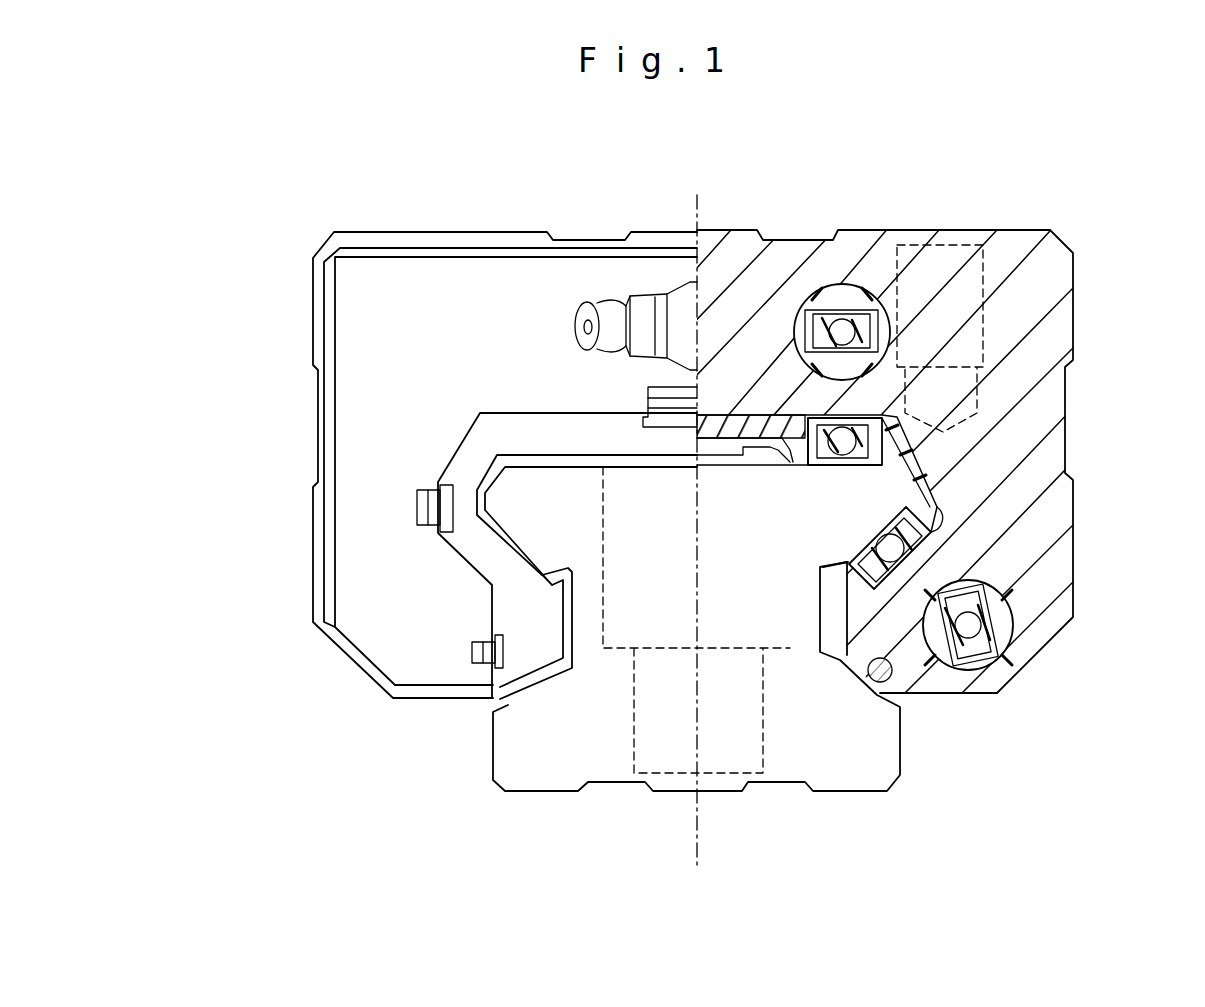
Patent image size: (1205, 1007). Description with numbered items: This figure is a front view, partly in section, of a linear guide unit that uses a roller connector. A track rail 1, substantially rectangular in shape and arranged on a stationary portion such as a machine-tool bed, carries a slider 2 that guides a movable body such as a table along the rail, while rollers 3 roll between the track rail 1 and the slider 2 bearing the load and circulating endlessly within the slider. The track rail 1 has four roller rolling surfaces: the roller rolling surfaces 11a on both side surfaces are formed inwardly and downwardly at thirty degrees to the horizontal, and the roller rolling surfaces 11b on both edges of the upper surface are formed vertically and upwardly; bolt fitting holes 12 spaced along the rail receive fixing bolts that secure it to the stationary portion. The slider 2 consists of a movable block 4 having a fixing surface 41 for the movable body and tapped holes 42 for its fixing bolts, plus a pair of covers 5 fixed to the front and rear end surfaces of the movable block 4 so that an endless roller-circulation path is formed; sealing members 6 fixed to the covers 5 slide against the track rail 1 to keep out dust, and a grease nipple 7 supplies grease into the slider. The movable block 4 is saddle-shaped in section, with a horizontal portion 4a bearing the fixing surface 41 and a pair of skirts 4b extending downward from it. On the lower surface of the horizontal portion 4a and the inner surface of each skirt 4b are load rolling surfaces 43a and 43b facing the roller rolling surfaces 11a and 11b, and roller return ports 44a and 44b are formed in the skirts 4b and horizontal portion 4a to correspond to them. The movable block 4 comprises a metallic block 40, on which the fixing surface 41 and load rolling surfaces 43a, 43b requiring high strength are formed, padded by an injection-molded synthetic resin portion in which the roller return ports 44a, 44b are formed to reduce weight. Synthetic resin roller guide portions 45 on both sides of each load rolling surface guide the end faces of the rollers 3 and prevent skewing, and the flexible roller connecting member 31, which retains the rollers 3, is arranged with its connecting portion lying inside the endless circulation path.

The track rail 1 is at (903, 795).
The slider 2 is at (305, 340).
The rollers 3 is at (907, 457).
The movable block 4 is at (1088, 256).
The horizontal portion 4a is at (728, 257).
The skirts 4b is at (310, 573).
The covers 5 is at (377, 631).
The sealing members 6 is at (530, 655).
The grease nipple 7 is at (606, 300).
The roller rolling surfaces 11a is at (870, 541).
The roller rolling surfaces 11b is at (837, 453).
The bolt fitting holes 12 is at (752, 747).
The roller connecting member 31 is at (843, 322).
The metallic block 40 is at (1063, 323).
The fixing surface 41 is at (476, 232).
The tapped holes 42 is at (960, 277).
The load rolling surfaces 43a is at (1045, 568).
The load rolling surfaces 43b is at (790, 427).
The roller return ports 44a is at (1010, 662).
The roller return ports 44b is at (828, 322).
The roller guide portions 45 is at (920, 505).